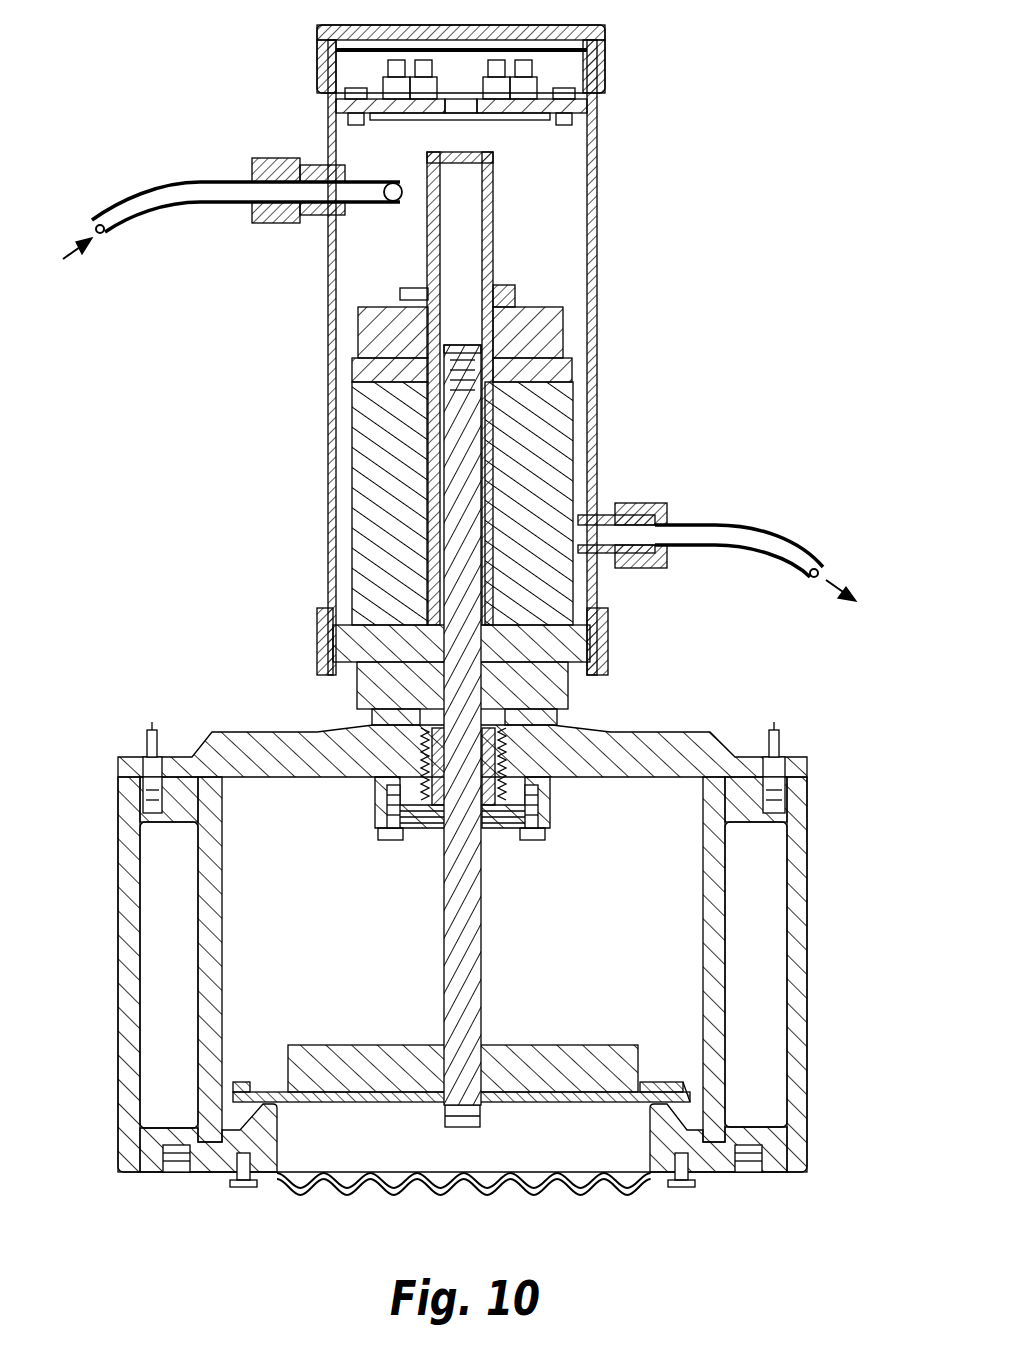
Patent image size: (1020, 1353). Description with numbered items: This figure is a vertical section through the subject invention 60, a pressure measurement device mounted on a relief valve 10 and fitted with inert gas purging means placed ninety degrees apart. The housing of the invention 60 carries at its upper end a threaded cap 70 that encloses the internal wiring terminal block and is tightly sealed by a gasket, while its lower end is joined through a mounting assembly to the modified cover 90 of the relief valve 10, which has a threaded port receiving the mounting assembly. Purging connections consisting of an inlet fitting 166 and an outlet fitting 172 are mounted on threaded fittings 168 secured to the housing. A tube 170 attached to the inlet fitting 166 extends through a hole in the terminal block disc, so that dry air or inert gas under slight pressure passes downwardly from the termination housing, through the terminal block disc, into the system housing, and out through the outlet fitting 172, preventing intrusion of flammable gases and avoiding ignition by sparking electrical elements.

The valve assembly 10 is at (852, 898).
The subject invention 60 is at (459, 362).
The threaded cap 70 is at (590, 26).
The modified cover 90 is at (678, 730).
The inlet fitting 166 is at (258, 222).
The threaded fittings 168 is at (322, 205).
The tube 170 is at (368, 178).
The outlet fitting 172 is at (660, 505).